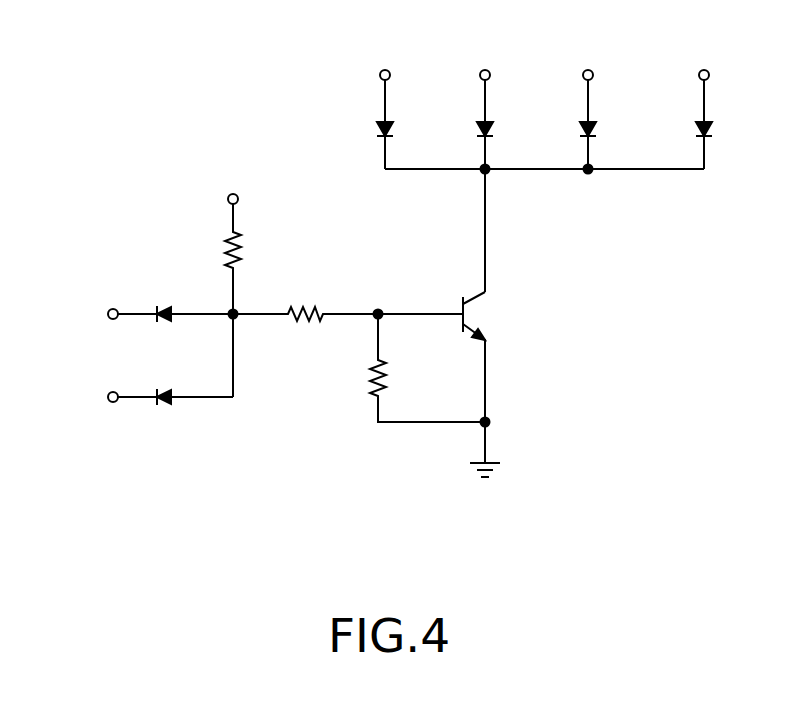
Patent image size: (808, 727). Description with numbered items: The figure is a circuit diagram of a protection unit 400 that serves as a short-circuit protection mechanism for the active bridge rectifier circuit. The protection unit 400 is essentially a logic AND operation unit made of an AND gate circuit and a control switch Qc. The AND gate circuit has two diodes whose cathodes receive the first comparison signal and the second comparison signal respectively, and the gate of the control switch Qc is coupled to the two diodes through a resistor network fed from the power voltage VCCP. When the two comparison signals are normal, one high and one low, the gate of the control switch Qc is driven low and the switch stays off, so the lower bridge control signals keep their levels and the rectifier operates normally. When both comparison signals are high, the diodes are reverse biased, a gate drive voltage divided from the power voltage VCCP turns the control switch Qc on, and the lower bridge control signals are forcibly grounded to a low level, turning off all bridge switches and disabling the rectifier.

The protection unit 400 is at (146, 252).
The control switch Qc is at (496, 357).
The power voltage VCCP is at (237, 237).